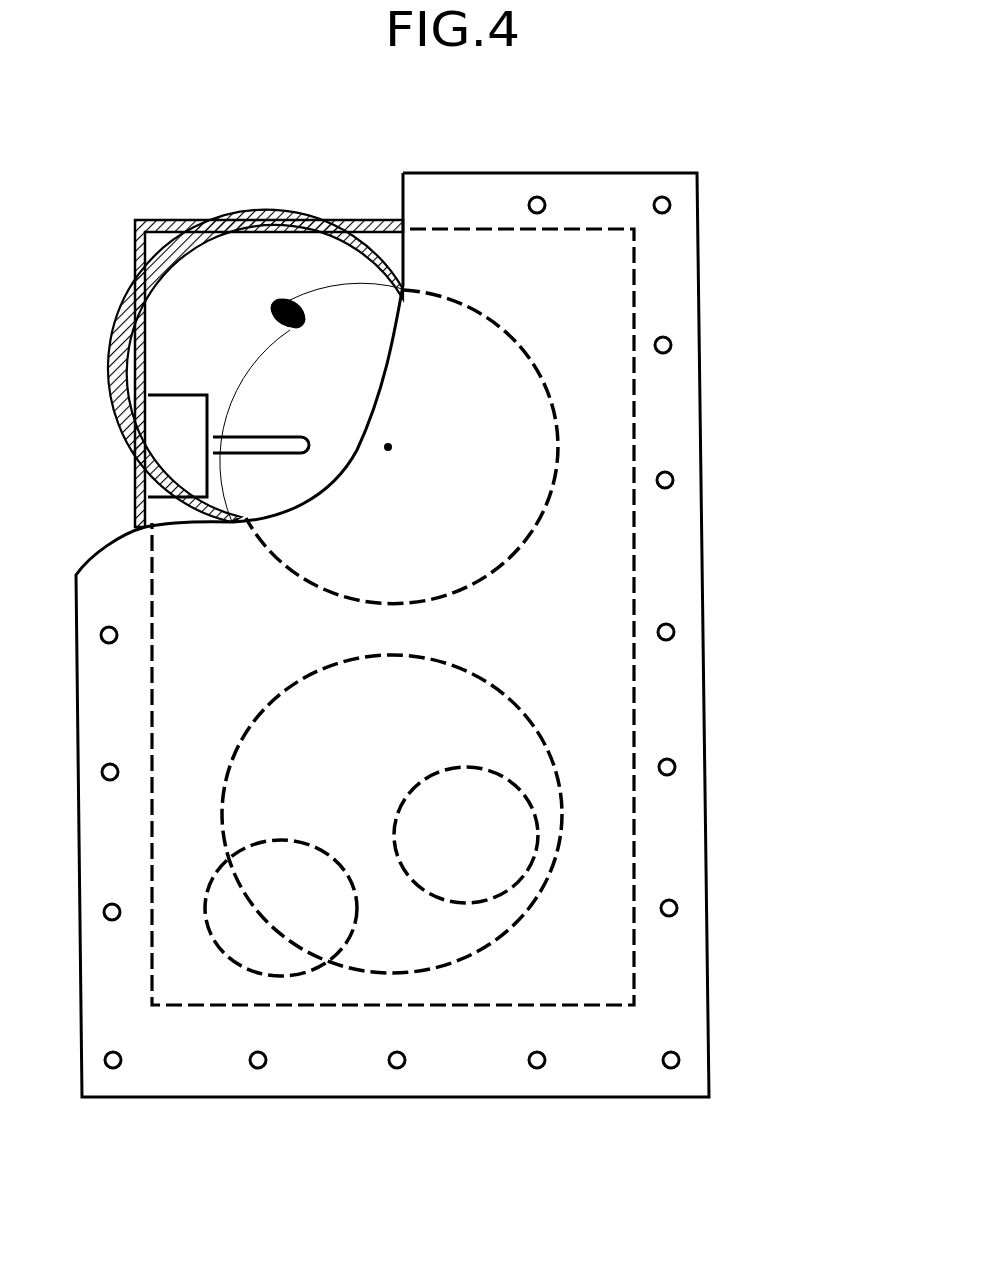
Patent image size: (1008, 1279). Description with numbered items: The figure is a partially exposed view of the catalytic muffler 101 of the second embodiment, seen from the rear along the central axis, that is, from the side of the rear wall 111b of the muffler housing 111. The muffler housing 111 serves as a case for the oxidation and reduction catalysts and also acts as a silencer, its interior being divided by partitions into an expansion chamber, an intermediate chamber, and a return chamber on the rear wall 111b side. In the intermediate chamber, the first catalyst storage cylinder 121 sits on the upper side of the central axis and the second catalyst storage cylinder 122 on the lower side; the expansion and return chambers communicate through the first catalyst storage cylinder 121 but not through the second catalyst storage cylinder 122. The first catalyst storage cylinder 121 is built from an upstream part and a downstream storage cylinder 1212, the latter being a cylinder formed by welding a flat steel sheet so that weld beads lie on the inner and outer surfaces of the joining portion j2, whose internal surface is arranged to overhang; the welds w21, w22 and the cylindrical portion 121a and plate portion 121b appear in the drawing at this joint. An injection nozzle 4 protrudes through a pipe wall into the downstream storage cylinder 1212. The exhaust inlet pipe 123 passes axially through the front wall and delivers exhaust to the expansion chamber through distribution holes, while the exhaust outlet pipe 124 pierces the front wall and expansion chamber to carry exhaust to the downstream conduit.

The catalytic muffler 101 is at (785, 301).
The muffler housing 111 is at (140, 422).
The rear wall 111b is at (596, 967).
The first catalyst storage cylinder 121 is at (515, 547).
The cylindrical portion 121a is at (360, 298).
The plate portion 121b is at (275, 311).
The downstream storage cylinder 1212 is at (323, 310).
The joining portion j2 is at (290, 302).
The weld w21 is at (287, 322).
The weld w22 is at (275, 310).
The second catalyst storage cylinder 122 is at (511, 698).
The exhaust inlet pipe 123 is at (248, 942).
The exhaust outlet pipe 124 is at (518, 826).
The injection nozzle 4 is at (290, 452).